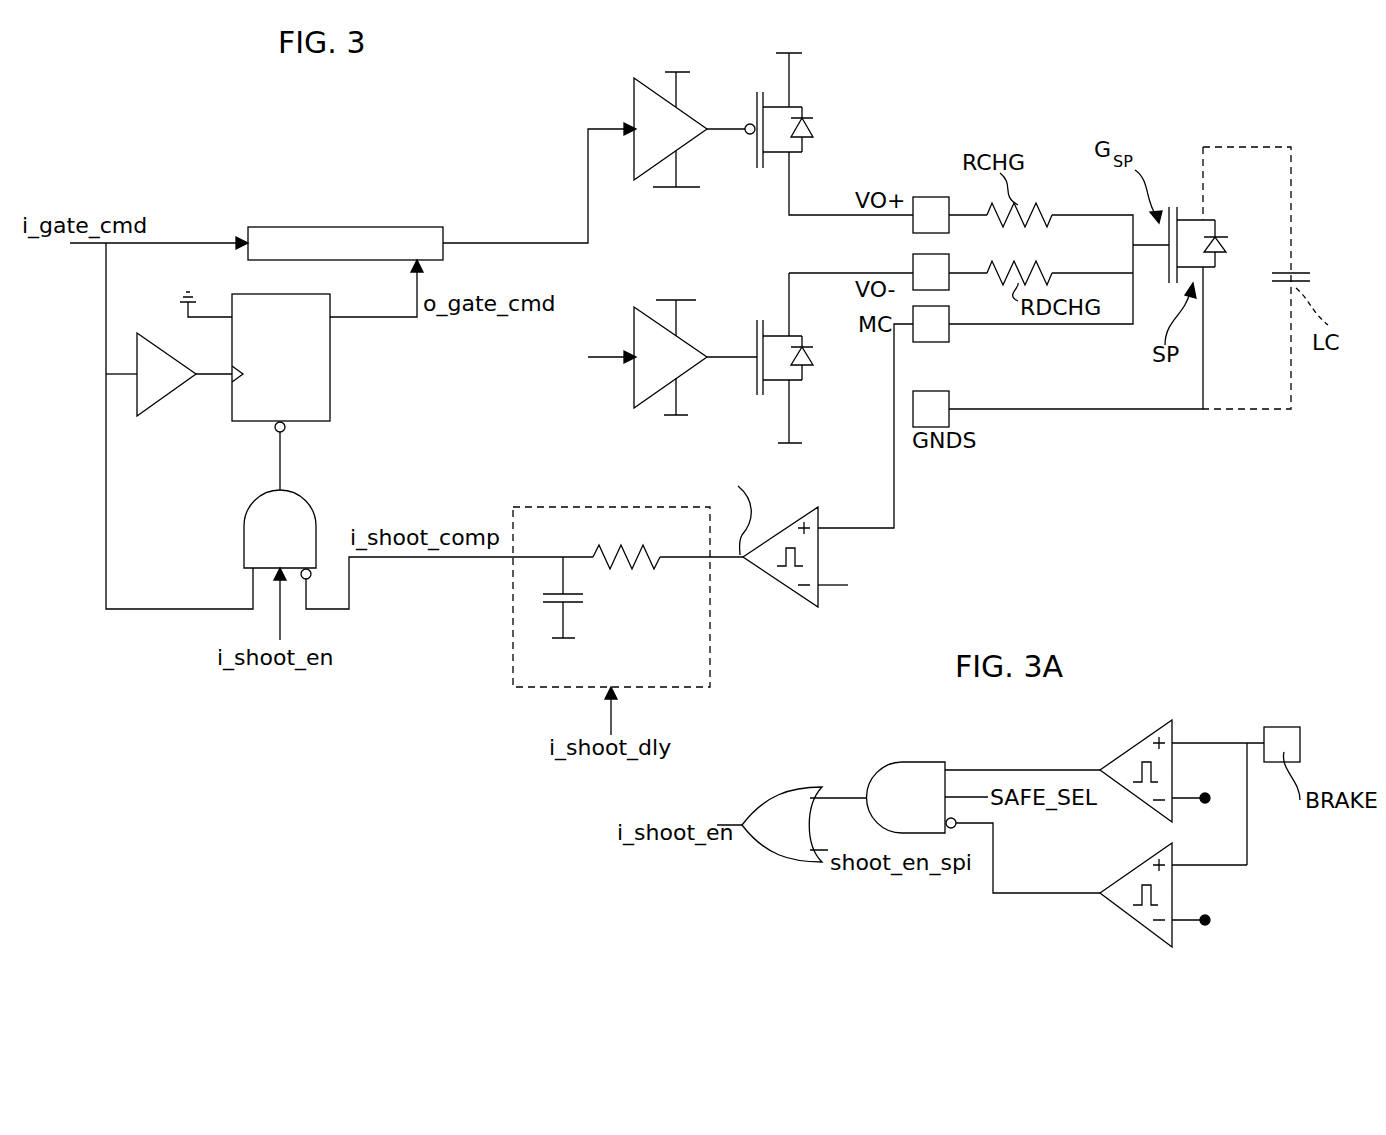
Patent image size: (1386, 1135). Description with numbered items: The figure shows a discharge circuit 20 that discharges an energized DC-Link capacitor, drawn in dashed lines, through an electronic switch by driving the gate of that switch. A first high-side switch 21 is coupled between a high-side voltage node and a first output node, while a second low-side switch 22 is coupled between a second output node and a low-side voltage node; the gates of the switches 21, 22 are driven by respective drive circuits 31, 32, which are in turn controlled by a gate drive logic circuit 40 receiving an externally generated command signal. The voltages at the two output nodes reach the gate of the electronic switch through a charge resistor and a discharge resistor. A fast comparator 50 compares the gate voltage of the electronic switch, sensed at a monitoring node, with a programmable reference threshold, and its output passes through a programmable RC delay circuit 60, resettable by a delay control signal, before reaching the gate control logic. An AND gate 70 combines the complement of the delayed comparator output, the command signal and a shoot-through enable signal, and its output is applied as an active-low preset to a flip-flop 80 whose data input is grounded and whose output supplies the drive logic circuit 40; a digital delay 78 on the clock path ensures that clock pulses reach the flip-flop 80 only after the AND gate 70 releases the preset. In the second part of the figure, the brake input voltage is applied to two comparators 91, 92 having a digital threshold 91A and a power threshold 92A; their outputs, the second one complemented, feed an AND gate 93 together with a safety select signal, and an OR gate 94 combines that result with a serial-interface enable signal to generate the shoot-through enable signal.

In FIG. 3, the discharge circuit 20 is at (470, 198).
In FIG. 3, the gate drive logic circuit 40 is at (345, 237).
In FIG. 3, the flip-flop 80 is at (248, 352).
In FIG. 3, the digital delay 78 is at (162, 395).
In FIG. 3, the AND gate 70 is at (253, 546).
In FIG. 3, the delay circuit 60 is at (530, 672).
In FIG. 3, the comparator 50 is at (790, 582).
In FIG. 3, the drive circuit 31 is at (646, 107).
In FIG. 3, the drive circuit 32 is at (640, 380).
In FIG. 3, the first switch 21 is at (832, 122).
In FIG. 3, the second switch 22 is at (822, 382).
In FIG. 3A, the AND gate 93 is at (910, 768).
In FIG. 3A, the OR gate 94 is at (776, 840).
In FIG. 3A, the comparator 91 is at (1118, 762).
In FIG. 3A, the comparator 92 is at (1120, 900).
In FIG. 3A, the digital threshold 91A is at (1173, 798).
In FIG. 3A, the power threshold 92A is at (1173, 920).